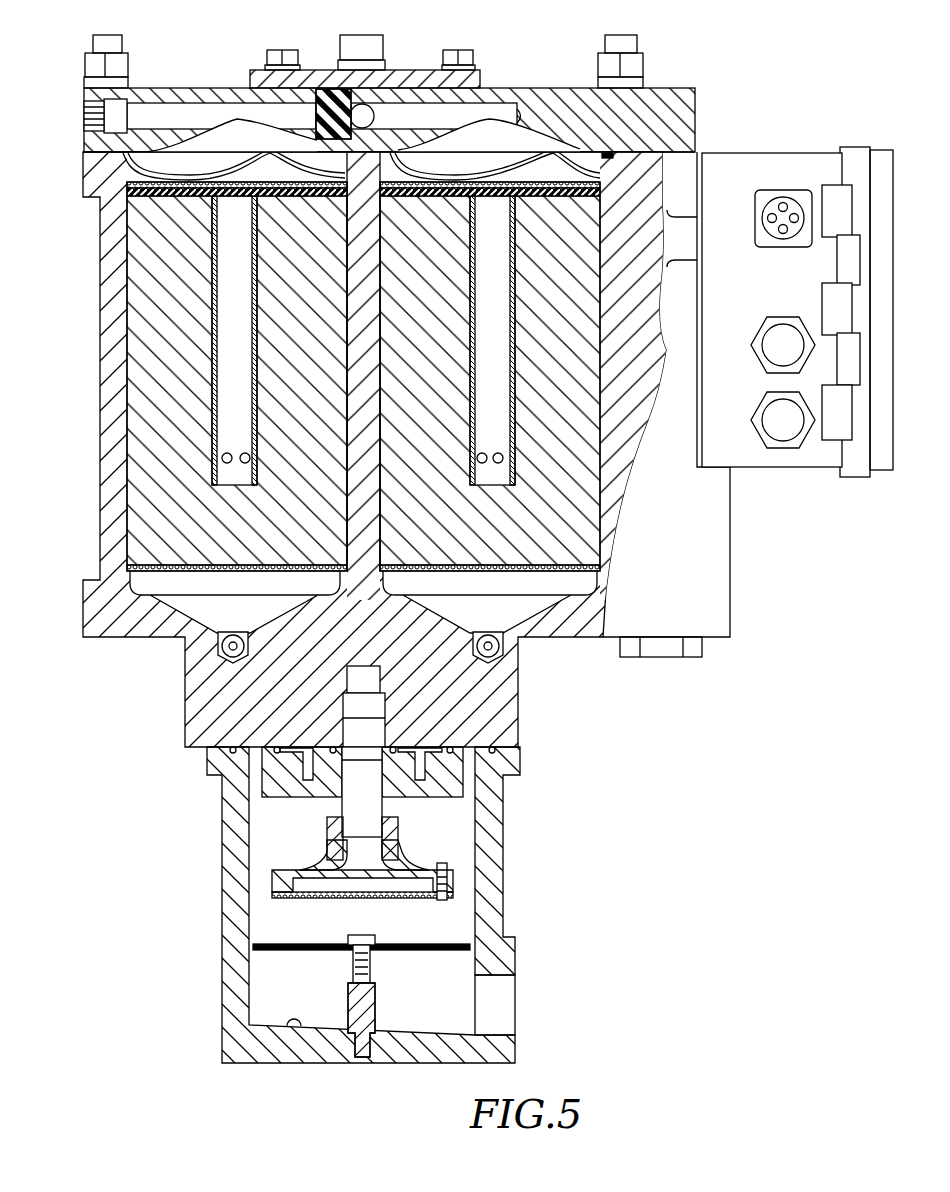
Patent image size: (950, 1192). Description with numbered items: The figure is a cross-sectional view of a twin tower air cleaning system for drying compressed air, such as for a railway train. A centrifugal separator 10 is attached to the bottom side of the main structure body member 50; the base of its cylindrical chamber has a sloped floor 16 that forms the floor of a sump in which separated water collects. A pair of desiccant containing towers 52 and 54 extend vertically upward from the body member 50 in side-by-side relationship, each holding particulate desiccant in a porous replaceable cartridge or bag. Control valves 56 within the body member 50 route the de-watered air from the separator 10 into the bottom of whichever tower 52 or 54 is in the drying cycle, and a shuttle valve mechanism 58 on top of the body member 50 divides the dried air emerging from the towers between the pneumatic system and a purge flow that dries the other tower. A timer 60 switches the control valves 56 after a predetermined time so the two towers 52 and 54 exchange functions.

The centrifugal separator 10 is at (204, 906).
The sloped floor 16 is at (292, 1027).
The main structure body member 50 is at (205, 693).
The desiccant containing tower 52 is at (130, 380).
The desiccant containing tower 54 is at (600, 350).
The control valve 56 is at (678, 515).
The shuttle valve mechanism 58 is at (328, 63).
The timer 60 is at (768, 158).